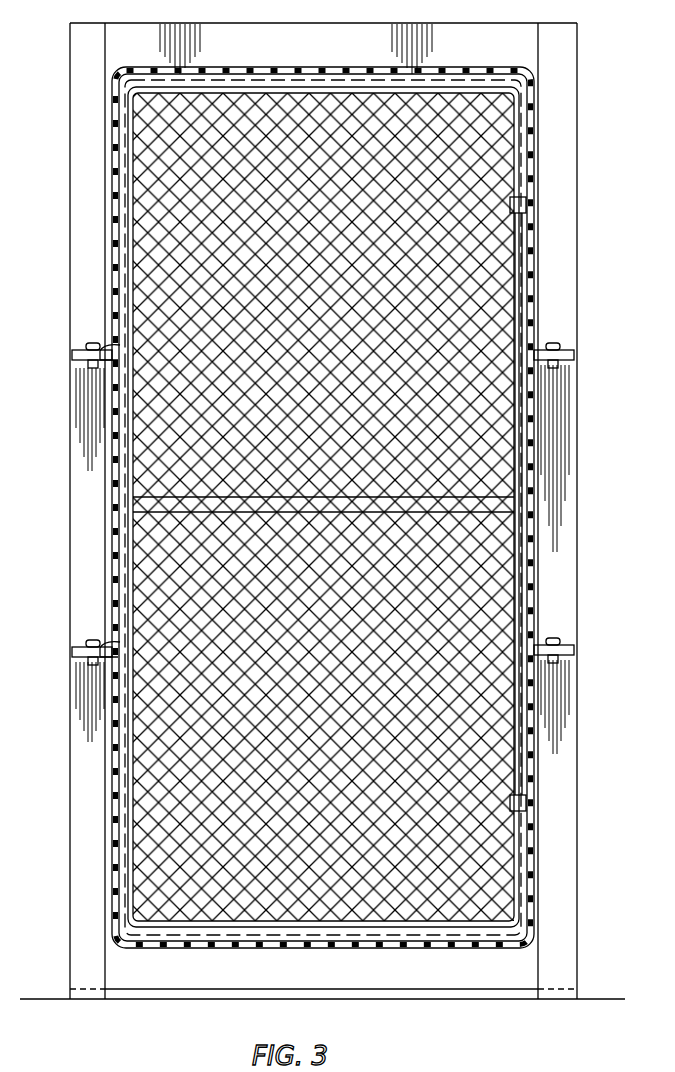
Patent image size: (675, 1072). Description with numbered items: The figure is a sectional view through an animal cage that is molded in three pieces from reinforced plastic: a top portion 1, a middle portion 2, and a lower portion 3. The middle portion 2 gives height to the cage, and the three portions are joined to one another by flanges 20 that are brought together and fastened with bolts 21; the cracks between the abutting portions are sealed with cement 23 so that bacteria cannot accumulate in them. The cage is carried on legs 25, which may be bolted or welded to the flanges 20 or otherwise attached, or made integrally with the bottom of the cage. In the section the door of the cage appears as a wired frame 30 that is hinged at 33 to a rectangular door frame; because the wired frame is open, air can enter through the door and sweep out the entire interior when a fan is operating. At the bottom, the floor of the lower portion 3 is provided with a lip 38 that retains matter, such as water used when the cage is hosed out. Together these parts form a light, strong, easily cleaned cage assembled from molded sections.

The top portion 1 is at (583, 85).
The middle portion 2 is at (367, 521).
The lower portion 3 is at (584, 742).
The flanges 20 is at (80, 362).
The bolts 21 is at (88, 348).
The cement 23 is at (108, 345).
The legs 25 is at (78, 902).
The wired frame 30 is at (520, 292).
The hinge 33 is at (526, 205).
The lip 38 is at (372, 923).